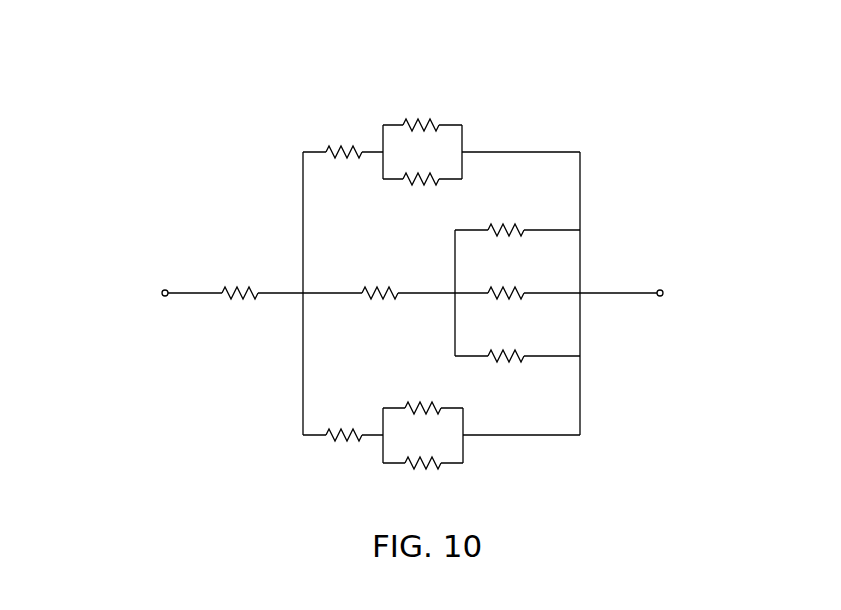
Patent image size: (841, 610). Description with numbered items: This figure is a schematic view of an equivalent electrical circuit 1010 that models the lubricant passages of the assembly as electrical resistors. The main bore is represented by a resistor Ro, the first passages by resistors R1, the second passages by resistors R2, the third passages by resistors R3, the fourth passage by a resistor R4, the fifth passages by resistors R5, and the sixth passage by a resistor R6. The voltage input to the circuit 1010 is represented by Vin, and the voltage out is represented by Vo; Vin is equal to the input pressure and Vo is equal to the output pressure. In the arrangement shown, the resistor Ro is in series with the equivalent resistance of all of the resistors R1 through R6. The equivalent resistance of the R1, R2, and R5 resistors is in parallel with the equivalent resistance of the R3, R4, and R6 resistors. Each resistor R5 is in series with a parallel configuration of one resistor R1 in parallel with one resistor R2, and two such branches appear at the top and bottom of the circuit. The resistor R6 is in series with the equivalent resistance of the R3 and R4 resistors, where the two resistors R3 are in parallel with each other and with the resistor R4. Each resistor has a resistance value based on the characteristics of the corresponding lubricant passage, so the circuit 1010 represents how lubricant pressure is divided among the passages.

The equivalent circuit 1010 is at (334, 86).
The voltage input Vin is at (163, 290).
The voltage out Vo is at (664, 293).
The resistor R0 Ro is at (227, 288).
The resistors R1 is at (438, 125).
The resistors R2 is at (435, 178).
The resistors R3 is at (518, 230).
The resistor R4 is at (522, 293).
The resistors R5 is at (332, 147).
The resistor R6 is at (370, 287).